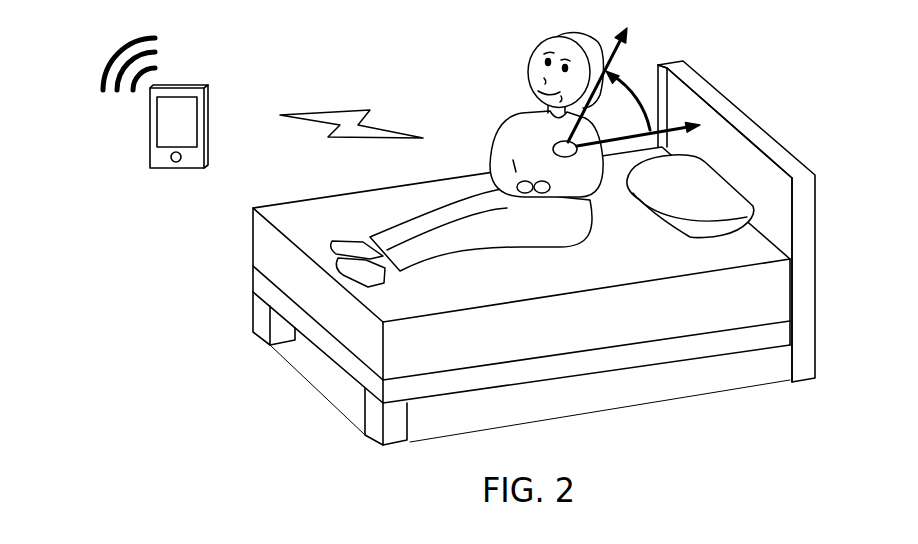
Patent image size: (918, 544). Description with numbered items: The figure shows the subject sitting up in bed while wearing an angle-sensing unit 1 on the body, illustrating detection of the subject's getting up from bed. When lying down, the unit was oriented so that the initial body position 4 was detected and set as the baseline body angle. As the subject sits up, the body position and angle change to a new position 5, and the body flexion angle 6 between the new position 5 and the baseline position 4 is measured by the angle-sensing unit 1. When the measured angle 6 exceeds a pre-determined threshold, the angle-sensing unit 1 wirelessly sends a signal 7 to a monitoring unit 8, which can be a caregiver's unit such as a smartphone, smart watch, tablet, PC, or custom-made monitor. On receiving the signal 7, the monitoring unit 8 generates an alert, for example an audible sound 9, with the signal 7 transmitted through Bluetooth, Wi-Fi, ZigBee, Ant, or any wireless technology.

The angle-sensing unit 1 is at (547, 143).
The initial body position 4 is at (690, 117).
The new position 5 is at (635, 38).
The body flexion angle 6 is at (643, 88).
The signal 7 is at (345, 107).
The monitoring unit 8 is at (140, 127).
The audible sound 9 is at (103, 70).